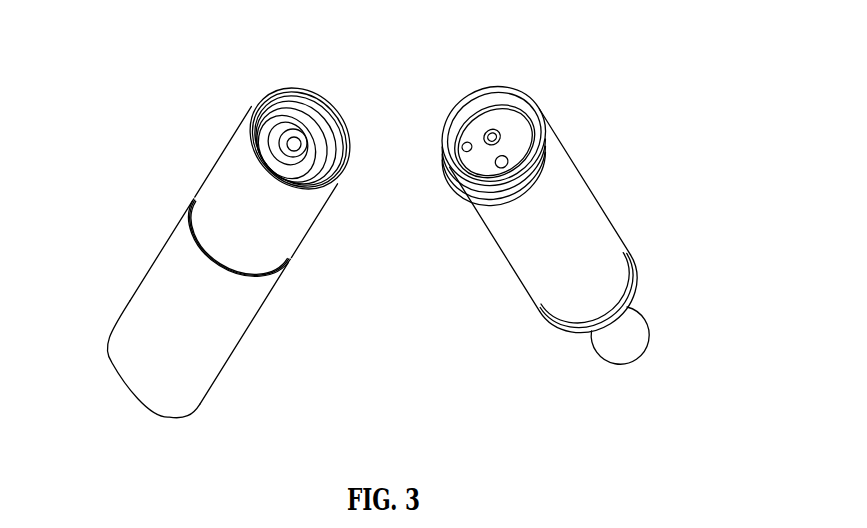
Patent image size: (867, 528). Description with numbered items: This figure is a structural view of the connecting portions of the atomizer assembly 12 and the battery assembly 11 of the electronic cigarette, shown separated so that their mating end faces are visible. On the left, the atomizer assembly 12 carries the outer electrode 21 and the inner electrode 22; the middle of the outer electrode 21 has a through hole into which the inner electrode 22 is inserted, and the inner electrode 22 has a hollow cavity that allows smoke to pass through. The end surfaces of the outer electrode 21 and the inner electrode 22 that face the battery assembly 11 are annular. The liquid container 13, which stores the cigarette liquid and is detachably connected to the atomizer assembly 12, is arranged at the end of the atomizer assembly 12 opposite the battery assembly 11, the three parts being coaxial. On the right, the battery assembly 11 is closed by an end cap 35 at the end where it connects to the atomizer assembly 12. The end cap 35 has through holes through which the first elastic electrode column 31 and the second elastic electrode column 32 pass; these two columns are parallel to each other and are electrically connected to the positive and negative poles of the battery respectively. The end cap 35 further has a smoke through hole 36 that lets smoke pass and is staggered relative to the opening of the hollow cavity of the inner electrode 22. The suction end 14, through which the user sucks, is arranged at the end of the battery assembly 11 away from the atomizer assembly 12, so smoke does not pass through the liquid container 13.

The battery assembly 11 is at (575, 218).
The atomizer assembly 12 is at (227, 170).
The liquid container 13 is at (153, 288).
The suction end 14 is at (630, 335).
The outer electrode 21 is at (257, 100).
The inner electrode 22 is at (292, 117).
The first elastic electrode column 31 is at (532, 133).
The second elastic electrode column 32 is at (490, 130).
The end cap 35 is at (513, 130).
The smoke through hole 36 is at (462, 130).